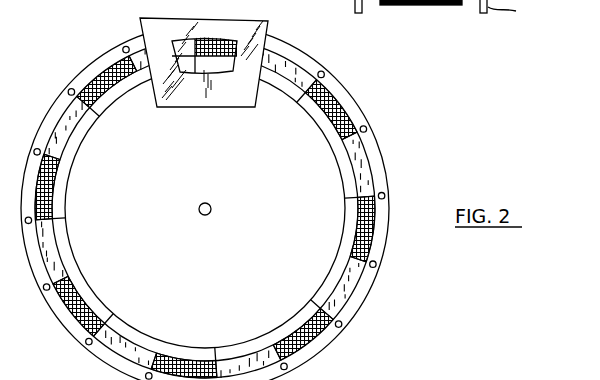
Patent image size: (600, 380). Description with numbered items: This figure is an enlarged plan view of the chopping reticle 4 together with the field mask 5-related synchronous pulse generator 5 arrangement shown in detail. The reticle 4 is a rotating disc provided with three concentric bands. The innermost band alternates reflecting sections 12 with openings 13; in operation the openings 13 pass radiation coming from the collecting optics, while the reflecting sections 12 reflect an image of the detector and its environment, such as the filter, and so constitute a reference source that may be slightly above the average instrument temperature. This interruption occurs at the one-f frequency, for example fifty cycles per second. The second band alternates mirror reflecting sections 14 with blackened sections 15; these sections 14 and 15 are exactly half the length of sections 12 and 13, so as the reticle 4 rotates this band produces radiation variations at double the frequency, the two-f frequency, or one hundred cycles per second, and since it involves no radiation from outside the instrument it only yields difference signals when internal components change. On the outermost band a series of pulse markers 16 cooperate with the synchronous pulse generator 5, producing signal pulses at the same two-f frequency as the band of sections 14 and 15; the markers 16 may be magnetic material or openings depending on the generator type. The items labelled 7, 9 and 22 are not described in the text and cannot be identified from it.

The reticle 4 is at (297, 47).
The synchronous pulse generator 5 is at (220, 22).
The drive shaft bar 7 is at (418, 5).
The support post 9 is at (341, 7).
The reflecting sections 12 is at (332, 139).
The openings 13 is at (343, 226).
The reflecting sections 14 is at (366, 158).
The blackened sections 15 is at (343, 117).
The pulse markers 16 is at (327, 73).
The reference filter 22 is at (497, 190).